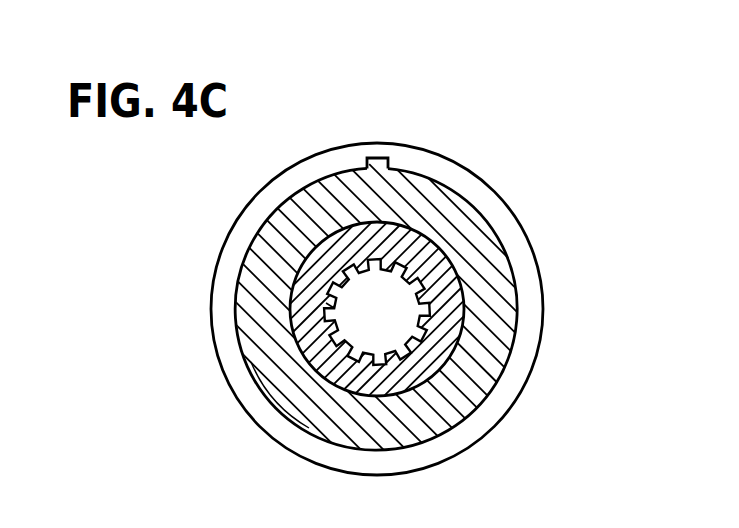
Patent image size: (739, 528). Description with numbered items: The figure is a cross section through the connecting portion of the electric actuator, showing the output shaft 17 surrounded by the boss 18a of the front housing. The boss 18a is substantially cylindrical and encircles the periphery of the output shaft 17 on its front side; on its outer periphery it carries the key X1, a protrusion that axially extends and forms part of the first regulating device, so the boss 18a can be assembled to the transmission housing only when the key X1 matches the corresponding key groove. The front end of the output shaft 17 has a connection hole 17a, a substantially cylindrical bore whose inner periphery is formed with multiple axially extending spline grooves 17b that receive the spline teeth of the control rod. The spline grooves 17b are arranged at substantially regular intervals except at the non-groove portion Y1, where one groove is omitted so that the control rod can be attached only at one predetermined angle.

The key X1 is at (390, 168).
The non-groove portion Y1 is at (377, 258).
The output shaft 17 is at (458, 289).
The connection hole 17a is at (405, 292).
The spline grooves 17b is at (326, 303).
The boss 18a is at (467, 380).